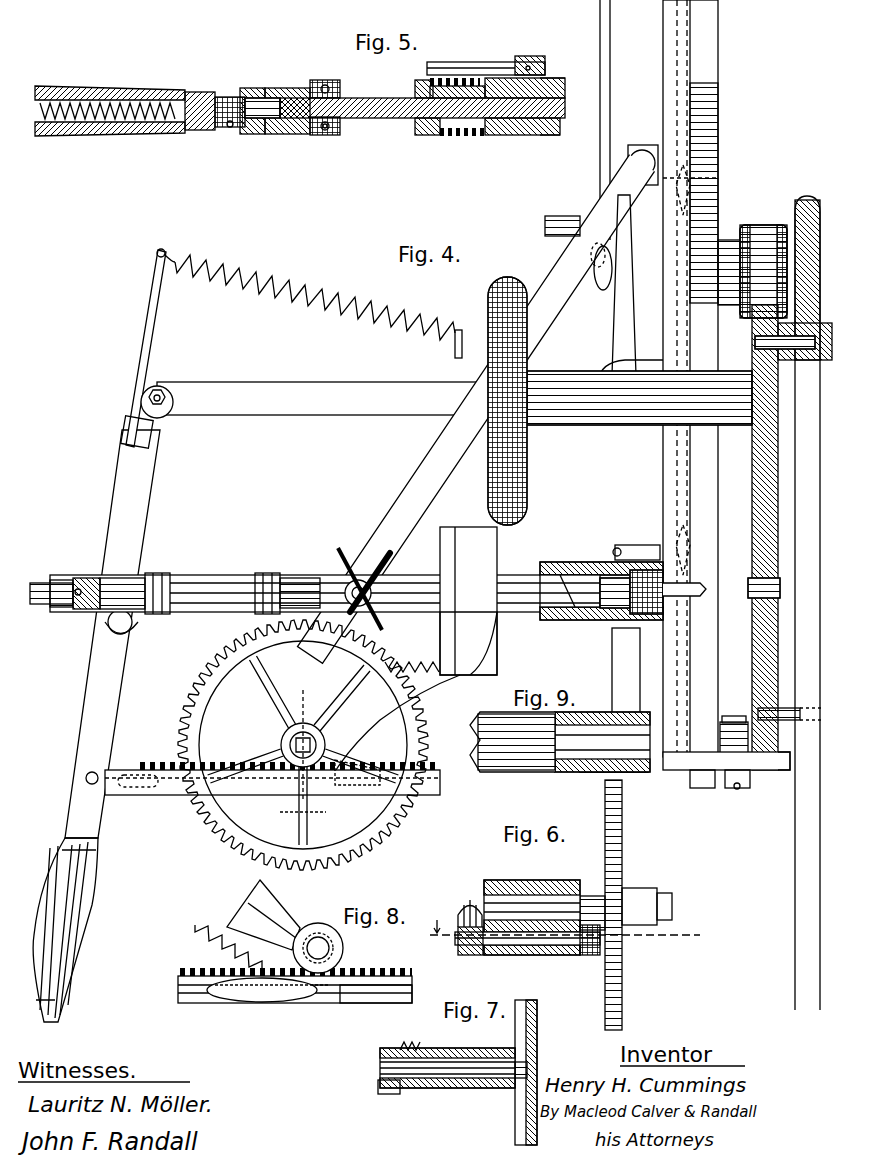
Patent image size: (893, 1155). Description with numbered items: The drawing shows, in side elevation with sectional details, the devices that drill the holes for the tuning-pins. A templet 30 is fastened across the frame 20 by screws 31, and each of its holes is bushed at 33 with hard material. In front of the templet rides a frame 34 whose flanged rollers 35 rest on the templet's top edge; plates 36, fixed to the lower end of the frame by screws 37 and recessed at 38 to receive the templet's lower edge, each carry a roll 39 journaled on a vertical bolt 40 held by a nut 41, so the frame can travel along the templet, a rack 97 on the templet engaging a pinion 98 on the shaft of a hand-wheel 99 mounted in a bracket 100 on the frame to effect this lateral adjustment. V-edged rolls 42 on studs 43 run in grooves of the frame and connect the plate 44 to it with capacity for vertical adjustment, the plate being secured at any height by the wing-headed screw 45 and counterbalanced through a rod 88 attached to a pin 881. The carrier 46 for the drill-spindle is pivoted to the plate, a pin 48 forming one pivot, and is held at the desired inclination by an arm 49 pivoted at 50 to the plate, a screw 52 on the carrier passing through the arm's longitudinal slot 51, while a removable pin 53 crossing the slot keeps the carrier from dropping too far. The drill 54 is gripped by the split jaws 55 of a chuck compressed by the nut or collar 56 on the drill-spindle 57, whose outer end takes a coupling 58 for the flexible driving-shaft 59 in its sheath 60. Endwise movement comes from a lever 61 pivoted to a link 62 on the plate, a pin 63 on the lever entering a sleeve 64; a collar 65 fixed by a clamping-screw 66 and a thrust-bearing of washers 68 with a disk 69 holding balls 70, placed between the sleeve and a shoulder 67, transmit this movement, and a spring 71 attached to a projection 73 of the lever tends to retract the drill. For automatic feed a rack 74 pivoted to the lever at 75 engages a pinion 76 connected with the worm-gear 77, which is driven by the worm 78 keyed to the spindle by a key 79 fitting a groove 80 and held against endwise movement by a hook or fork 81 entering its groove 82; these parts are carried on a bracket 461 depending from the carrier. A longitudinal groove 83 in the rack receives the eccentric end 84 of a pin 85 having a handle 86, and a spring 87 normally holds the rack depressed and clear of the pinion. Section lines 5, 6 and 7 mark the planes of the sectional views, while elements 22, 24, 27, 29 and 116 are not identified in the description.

In FIG. 4, the section line 5 is at (30, 596).
In FIG. 4, the section line 6 is at (303, 800).
In FIG. 6, the section line 7 is at (556, 932).
In FIG. 4, the frame 20 is at (808, 198).
In FIG. 4, the spring stop 22 is at (455, 352).
In FIG. 4, the rack bar 24 is at (140, 795).
In FIG. 8, the rack bar 24 is at (372, 1003).
In FIG. 4, the gear wheel 27 is at (240, 842).
In FIG. 5, the bracket 29 is at (420, 84).
In FIG. 4, the templet 30 is at (760, 472).
In FIG. 4, the screws 31 is at (800, 714).
In FIG. 4, the bushing 33 is at (768, 585).
In FIG. 4, the frame 34 is at (700, 676).
In FIG. 4, the rollers 35 is at (763, 240).
In FIG. 4, the plates 36 is at (718, 770).
In FIG. 4, the screws 37 is at (702, 788).
In FIG. 4, the recess 38 is at (780, 770).
In FIG. 4, the roll 39 is at (728, 722).
In FIG. 4, the vertical bolt 40 is at (740, 716).
In FIG. 4, the nut 41 is at (738, 788).
In FIG. 4, the rolls 42 is at (680, 540).
In FIG. 4, the studs or bolts 43 is at (640, 545).
In FIG. 4, the plate 44 is at (612, 326).
In FIG. 4, the screw 45 is at (600, 280).
In FIG. 5, the carrier 46 is at (555, 135).
In FIG. 4, the carrier 46 is at (556, 562).
In FIG. 9, the carrier 46 is at (508, 772).
In FIG. 4, the pin 48 is at (632, 755).
In FIG. 4, the arm 49 is at (476, 409).
In FIG. 4, the pivot 50 is at (641, 150).
In FIG. 4, the longitudinal slot 51 is at (390, 552).
In FIG. 4, the screw 52 is at (357, 580).
In FIG. 4, the removable pin 53 is at (338, 565).
In FIG. 4, the drill 54 is at (690, 583).
In FIG. 4, the split jaws 55 is at (610, 607).
In FIG. 4, the nut or collar 56 is at (652, 614).
In FIG. 5, the drill-spindle 57 is at (527, 135).
In FIG. 4, the drill-spindle 57 is at (565, 605).
In FIG. 5, the coupling 58 is at (228, 128).
In FIG. 4, the coupling 58 is at (62, 607).
In FIG. 5, the flexible driving-shaft 59 is at (198, 92).
In FIG. 5, the sheath 60 is at (95, 133).
In FIG. 4, the lever 61 is at (112, 634).
In FIG. 4, the link 62 is at (335, 400).
In FIG. 4, the pin 63 is at (132, 630).
In FIG. 5, the sleeve 64 is at (290, 88).
In FIG. 4, the sleeve 64 is at (108, 576).
In FIG. 5, the collar 65 is at (252, 88).
In FIG. 4, the collar 65 is at (80, 578).
In FIG. 5, the clamping-screw 66 is at (235, 130).
In FIG. 4, the clamping-screw 66 is at (78, 596).
In FIG. 5, the shoulder 67 is at (345, 96).
In FIG. 5, the washers 68 is at (340, 128).
In FIG. 5, the disk 69 is at (335, 82).
In FIG. 5, the balls 70 is at (327, 135).
In FIG. 4, the spring 71 is at (275, 290).
In FIG. 4, the projection 73 is at (146, 348).
In FIG. 6, the rack 74 is at (590, 955).
In FIG. 4, the pivot 75 is at (86, 778).
In FIG. 8, the pinion 76 is at (322, 935).
In FIG. 6, the pinion 76 is at (590, 896).
In FIG. 6, the worm-gear 77 is at (622, 994).
In FIG. 5, the worm 78 is at (463, 154).
In FIG. 4, the worm 78 is at (290, 578).
In FIG. 6, the worm 78 is at (470, 927).
In FIG. 5, the key 79 is at (465, 138).
In FIG. 5, the longitudinal groove 80 is at (565, 92).
In FIG. 5, the hook or fork 81 is at (497, 62).
In FIG. 5, the groove 82 is at (430, 135).
In FIG. 8, the longitudinal groove 83 is at (178, 986).
In FIG. 7, the longitudinal groove 83 is at (522, 1108).
In FIG. 7, the eccentrically-formed end 84 is at (530, 1068).
In FIG. 7, the pin 85 is at (378, 1086).
In FIG. 4, the handle 86 is at (400, 740).
In FIG. 8, the handle 86 is at (248, 1002).
In FIG. 6, the handle 86 is at (460, 915).
In FIG. 7, the handle 86 is at (405, 1040).
In FIG. 8, the spring 87 is at (198, 940).
In FIG. 4, the rod 88 is at (612, 60).
In FIG. 4, the rack 97 is at (790, 360).
In FIG. 4, the pinion 98 is at (725, 425).
In FIG. 4, the hand-wheel 99 is at (507, 401).
In FIG. 4, the bracket 100 is at (620, 365).
In FIG. 4, the block 116 is at (468, 540).
In FIG. 4, the bracket 461 is at (461, 643).
In FIG. 8, the bracket 461 is at (250, 915).
In FIG. 6, the bracket 461 is at (545, 880).
In FIG. 7, the bracket 461 is at (432, 1088).
In FIG. 4, the pin 881 is at (545, 226).